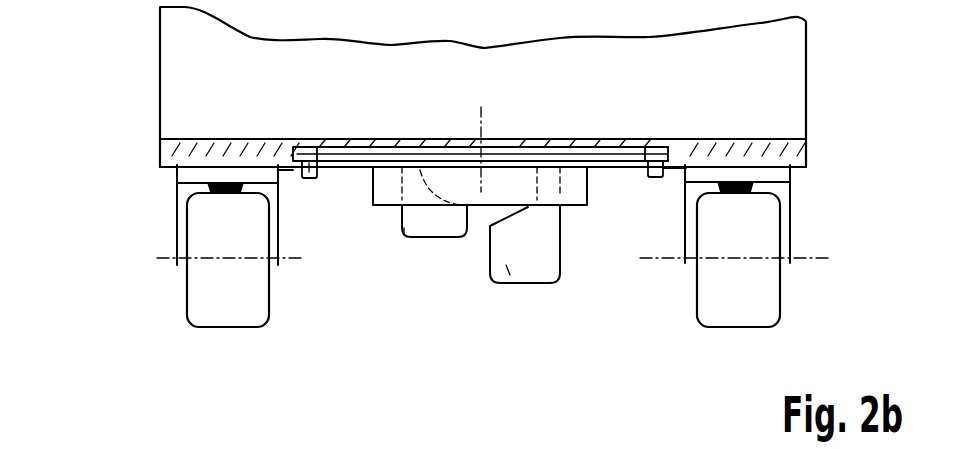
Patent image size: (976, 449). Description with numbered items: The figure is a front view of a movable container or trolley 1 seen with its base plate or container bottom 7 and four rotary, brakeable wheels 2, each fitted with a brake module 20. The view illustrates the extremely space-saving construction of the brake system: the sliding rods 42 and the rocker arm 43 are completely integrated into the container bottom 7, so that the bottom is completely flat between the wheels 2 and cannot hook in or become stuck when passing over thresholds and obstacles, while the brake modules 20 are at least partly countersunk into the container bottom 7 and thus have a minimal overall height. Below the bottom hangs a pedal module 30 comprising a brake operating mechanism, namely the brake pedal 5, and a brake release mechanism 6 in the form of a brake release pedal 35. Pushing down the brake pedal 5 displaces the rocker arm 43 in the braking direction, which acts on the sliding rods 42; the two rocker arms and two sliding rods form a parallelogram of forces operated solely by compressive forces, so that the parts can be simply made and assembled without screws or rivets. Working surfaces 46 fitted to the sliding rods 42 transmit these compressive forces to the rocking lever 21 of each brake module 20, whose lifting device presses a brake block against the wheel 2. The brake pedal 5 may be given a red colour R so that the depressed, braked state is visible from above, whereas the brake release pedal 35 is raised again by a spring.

The movable container or trolley 1 is at (160, 47).
The base plate / container bottom 7 is at (165, 148).
The rocker arm 43 is at (498, 155).
The sliding rod 42 is at (300, 150).
The rocking lever 21 is at (672, 169).
The working surface 46 is at (313, 182).
The brake module 20 is at (197, 177).
The wheel unit 2 is at (203, 298).
The pedal module 30 is at (583, 205).
The brake release mechanism 6 is at (433, 237).
The brake release pedal 35 is at (413, 237).
The brake pedal 5 is at (538, 283).
The red colour R is at (508, 270).